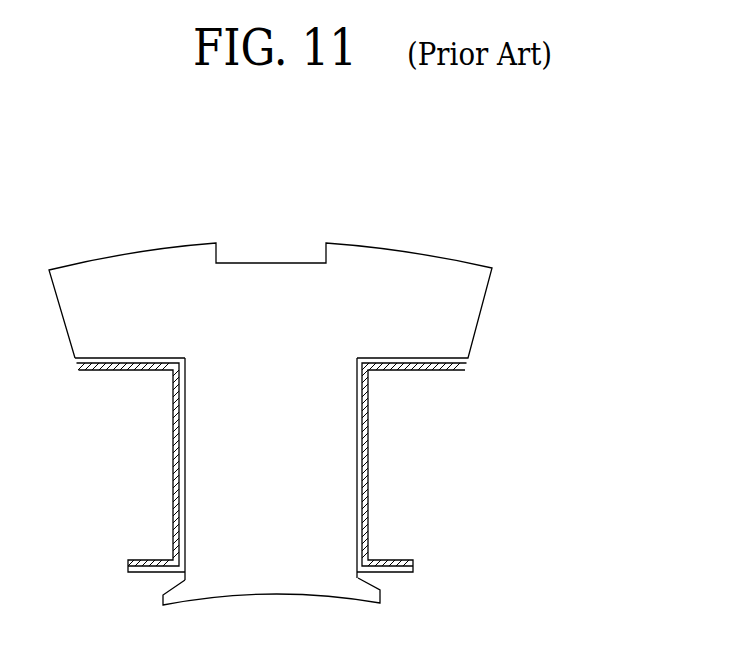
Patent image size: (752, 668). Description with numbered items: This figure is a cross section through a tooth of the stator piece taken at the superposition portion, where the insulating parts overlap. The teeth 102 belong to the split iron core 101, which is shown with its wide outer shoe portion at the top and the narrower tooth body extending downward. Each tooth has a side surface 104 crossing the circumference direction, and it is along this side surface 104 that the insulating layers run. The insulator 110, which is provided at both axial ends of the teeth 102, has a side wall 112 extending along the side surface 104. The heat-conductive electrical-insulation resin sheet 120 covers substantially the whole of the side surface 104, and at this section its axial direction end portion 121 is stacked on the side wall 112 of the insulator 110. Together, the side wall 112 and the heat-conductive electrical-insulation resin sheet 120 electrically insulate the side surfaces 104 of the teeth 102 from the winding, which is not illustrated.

The split iron core 101 is at (383, 247).
The teeth 102 is at (213, 457).
The side surface 104 is at (357, 577).
The axial direction end portion 121 is at (320, 467).
The heat-conductive electrical-insulation resin sheet 120 is at (370, 423).
The side wall 112 is at (320, 464).
The insulator 110 is at (370, 498).